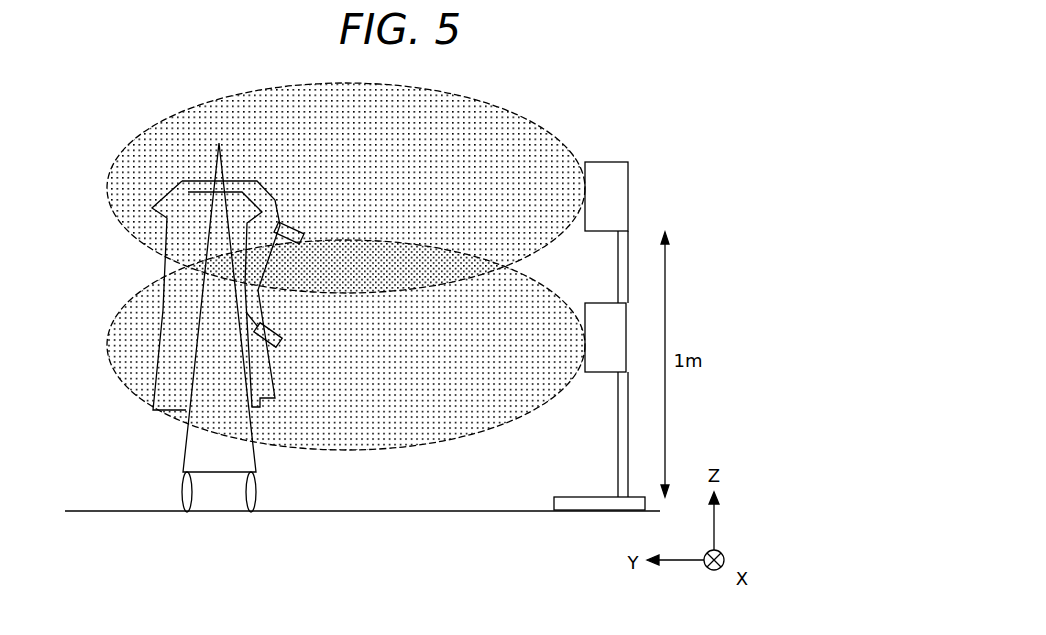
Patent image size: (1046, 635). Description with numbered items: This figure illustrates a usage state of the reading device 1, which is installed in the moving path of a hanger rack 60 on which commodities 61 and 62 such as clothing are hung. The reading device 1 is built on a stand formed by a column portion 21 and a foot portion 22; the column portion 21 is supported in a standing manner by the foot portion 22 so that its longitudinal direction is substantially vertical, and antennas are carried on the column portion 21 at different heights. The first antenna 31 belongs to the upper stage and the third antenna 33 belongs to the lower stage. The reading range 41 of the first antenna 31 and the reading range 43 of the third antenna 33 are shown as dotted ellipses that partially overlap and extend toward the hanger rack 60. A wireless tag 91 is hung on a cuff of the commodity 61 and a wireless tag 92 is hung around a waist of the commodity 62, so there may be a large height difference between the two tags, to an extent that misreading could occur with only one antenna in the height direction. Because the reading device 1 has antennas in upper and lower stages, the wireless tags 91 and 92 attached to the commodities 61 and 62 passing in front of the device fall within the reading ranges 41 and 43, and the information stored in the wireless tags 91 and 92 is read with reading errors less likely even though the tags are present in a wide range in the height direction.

The reading device 1 is at (617, 107).
The column portion 21 is at (628, 415).
The foot portion 22 is at (577, 503).
The first antenna 31 is at (608, 197).
The third antenna 33 is at (608, 333).
The reading range 41 is at (502, 108).
The reading range 43 is at (427, 444).
The hanger rack 60 is at (218, 147).
The commodity 61 is at (183, 180).
The commodity 62 is at (187, 245).
The wireless tag 91 is at (284, 222).
The wireless tag 92 is at (272, 348).